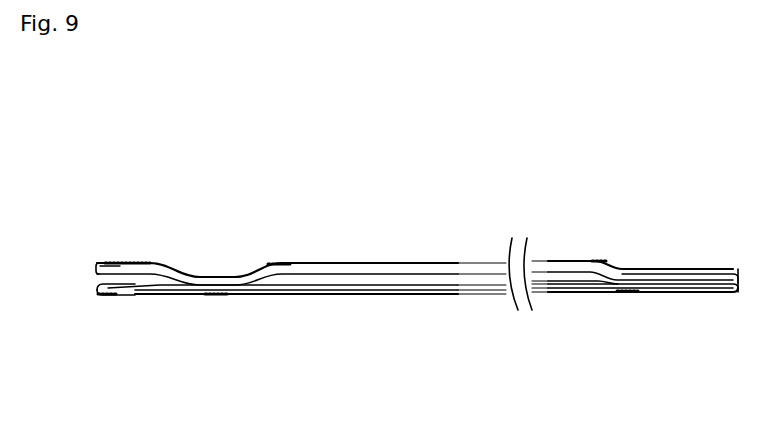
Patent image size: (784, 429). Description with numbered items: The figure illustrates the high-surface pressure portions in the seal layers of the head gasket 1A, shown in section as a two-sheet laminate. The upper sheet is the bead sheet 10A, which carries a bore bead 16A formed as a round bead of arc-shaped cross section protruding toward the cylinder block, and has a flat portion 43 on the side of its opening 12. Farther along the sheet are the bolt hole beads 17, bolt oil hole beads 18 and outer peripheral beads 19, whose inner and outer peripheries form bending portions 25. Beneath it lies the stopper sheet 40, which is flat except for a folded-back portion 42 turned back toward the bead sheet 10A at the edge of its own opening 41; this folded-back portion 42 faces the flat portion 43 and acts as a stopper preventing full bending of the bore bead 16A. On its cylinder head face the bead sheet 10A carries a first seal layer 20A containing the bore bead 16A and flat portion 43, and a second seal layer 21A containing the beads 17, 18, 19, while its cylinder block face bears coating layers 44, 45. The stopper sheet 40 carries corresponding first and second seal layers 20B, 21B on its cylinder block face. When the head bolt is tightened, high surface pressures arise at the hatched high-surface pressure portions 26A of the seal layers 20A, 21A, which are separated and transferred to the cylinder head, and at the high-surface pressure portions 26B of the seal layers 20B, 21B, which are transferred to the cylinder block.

The head gasket 1A is at (553, 188).
The bead sheet 10A is at (470, 257).
The opening 12 is at (96, 267).
The bore bead 16A is at (213, 271).
The bolt hole beads 17 is at (640, 270).
The bolt oil hole beads 18 is at (626, 261).
The outer peripheral beads 19 is at (654, 235).
The first seal layer 20A is at (243, 268).
The first seal layer 20B is at (158, 297).
The second seal layer 21A is at (710, 268).
The second seal layer 21B is at (718, 293).
The bending portions 25 is at (630, 277).
The high-surface pressure portions 26A is at (114, 263).
The high-surface pressure portions 26B is at (600, 259).
The stopper sheet 40 is at (487, 300).
The opening 41 is at (98, 287).
The folded-back portion 42 is at (105, 294).
The flat portion 43 is at (108, 270).
The coating layer 44 is at (361, 286).
The coating layer 45 is at (612, 286).